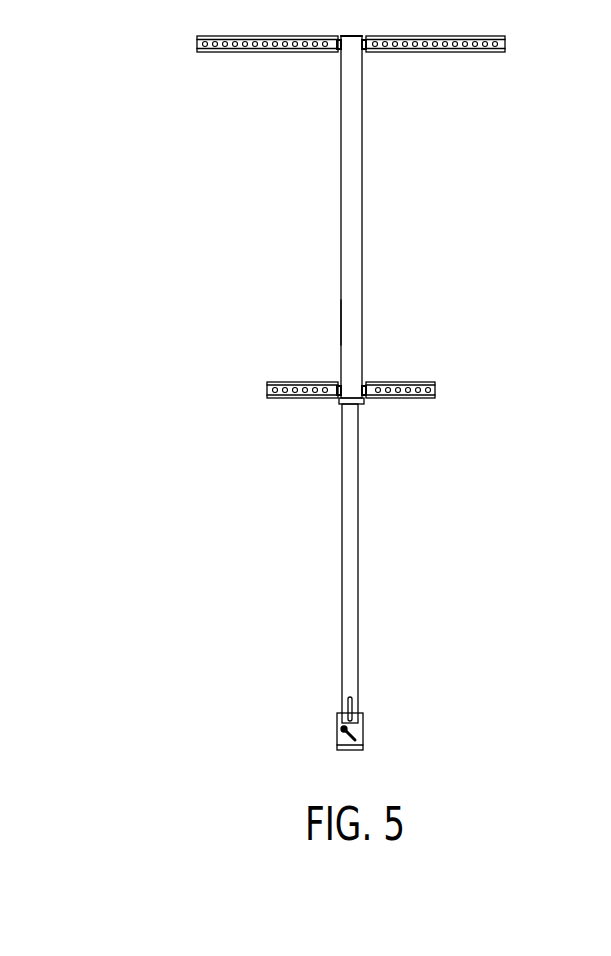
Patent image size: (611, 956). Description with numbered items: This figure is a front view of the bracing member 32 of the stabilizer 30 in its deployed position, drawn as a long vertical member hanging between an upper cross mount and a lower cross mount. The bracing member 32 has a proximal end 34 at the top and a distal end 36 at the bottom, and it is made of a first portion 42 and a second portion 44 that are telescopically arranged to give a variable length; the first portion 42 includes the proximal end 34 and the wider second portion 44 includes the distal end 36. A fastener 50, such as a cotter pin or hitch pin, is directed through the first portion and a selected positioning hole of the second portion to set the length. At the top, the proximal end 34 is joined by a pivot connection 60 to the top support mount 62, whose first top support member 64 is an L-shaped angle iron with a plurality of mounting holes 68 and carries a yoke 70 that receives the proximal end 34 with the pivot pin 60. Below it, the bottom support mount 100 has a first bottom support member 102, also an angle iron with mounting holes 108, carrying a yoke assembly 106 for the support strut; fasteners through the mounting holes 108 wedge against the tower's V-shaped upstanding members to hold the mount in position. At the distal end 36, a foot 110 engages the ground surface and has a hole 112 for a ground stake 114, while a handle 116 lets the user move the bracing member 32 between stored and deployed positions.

The stabilizer 30 is at (234, 292).
The bracing member 32 is at (362, 330).
The proximal end 34 is at (354, 56).
The distal end 36 is at (365, 716).
The first portion 42 is at (342, 318).
The second portion 44 is at (343, 640).
The fastener 50 is at (352, 404).
The pivot connection 60 is at (340, 50).
The top support mount 62 is at (188, 48).
The first top support member 64 is at (508, 46).
The mounting holes 68 is at (447, 52).
The yoke 70 is at (365, 54).
The bottom support mount 100 is at (262, 390).
The first bottom support member 102 is at (437, 390).
The yoke assembly 106 is at (364, 388).
The mounting holes 108 is at (397, 396).
The foot 110 is at (350, 748).
The hole 112 is at (356, 740).
The ground stake 114 is at (343, 726).
The handle 116 is at (354, 702).